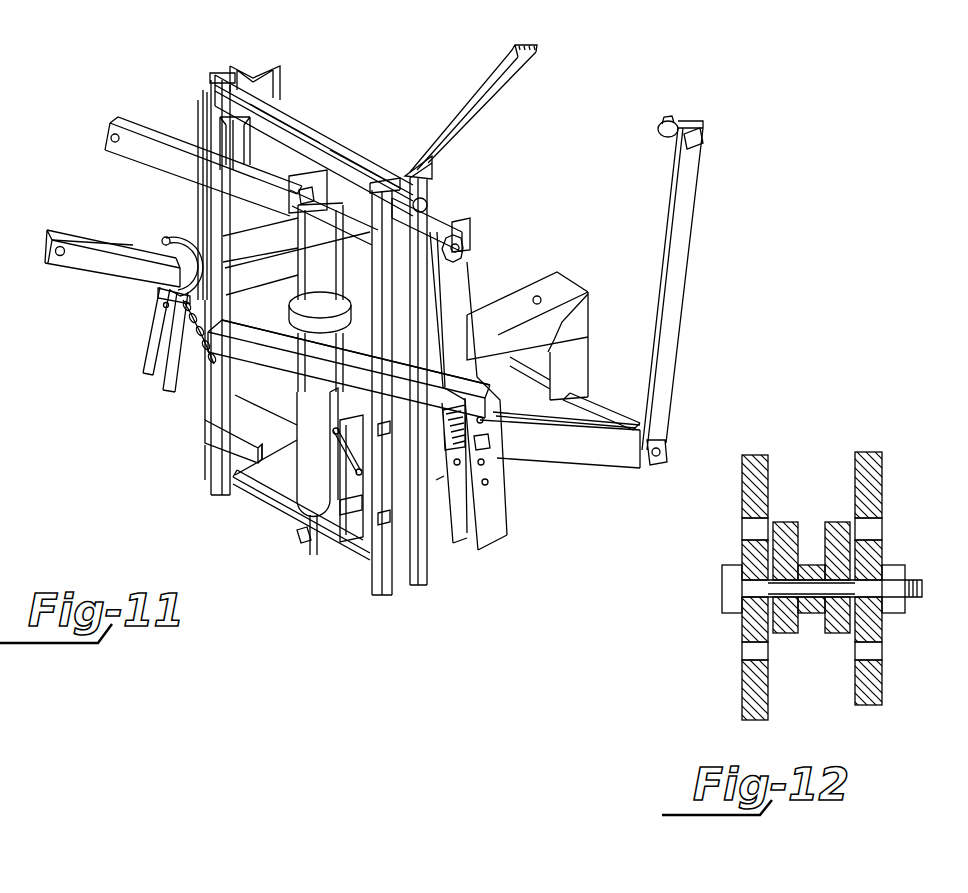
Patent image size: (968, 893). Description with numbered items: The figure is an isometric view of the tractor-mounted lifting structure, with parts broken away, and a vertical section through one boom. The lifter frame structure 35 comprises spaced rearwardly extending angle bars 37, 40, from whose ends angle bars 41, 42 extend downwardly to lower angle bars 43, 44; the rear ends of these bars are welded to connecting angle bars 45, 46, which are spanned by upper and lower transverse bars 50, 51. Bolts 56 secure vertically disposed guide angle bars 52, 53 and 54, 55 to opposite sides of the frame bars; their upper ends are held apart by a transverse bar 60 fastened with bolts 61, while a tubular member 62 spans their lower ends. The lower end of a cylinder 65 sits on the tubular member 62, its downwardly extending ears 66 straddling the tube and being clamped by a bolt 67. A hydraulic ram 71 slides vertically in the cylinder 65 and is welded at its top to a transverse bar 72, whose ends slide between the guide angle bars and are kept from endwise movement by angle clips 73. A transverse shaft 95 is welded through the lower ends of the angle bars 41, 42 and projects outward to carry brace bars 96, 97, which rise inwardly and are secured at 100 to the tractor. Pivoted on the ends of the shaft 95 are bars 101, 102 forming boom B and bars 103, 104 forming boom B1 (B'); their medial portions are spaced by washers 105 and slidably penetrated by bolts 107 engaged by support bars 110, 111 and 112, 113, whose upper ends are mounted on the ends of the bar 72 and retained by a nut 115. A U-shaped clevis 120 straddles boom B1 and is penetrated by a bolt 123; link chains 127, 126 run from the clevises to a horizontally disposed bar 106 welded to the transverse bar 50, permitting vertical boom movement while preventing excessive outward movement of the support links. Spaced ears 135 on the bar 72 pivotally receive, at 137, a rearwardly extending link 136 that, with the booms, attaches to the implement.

In FIG. 11, the lifter frame structure 35 is at (534, 282).
In FIG. 11, the angle bar 37 is at (252, 338).
In FIG. 11, the angle bar 40 is at (566, 293).
In FIG. 11, the angle bar 41 is at (470, 228).
In FIG. 11, the angle bar 42 is at (586, 360).
In FIG. 11, the angle bar 43 is at (245, 458).
In FIG. 11, the angle bar 44 is at (445, 478).
In FIG. 11, the connecting angle bar 45 is at (214, 413).
In FIG. 11, the connecting angle bar 46 is at (355, 488).
In FIG. 11, the transverse bar 50 is at (303, 425).
In FIG. 11, the transverse bar 51 is at (262, 462).
In FIG. 11, the angle bar 52 is at (213, 74).
In FIG. 11, the angle bar 53 is at (279, 68).
In FIG. 11, the angle bar 54 is at (377, 182).
In FIG. 11, the angle bar 55 is at (434, 165).
In FIG. 11, the bolt 56 is at (378, 422).
In FIG. 11, the transverse bar 60 is at (278, 115).
In FIG. 11, the bolt 61 is at (205, 92).
In FIG. 11, the tubular member 62 is at (265, 497).
In FIG. 11, the cylinder 65 is at (316, 330).
In FIG. 11, the ear 66 is at (315, 554).
In FIG. 11, the bolt 67 is at (297, 538).
In FIG. 11, the hydraulic ram 71 is at (338, 270).
In FIG. 11, the transverse bar 72 is at (333, 167).
In FIG. 11, the angle clip 73 is at (222, 135).
In FIG. 11, the transverse shaft 95 is at (527, 370).
In FIG. 11, the brace bar 96 is at (497, 95).
In FIG. 11, the brace bar 97 is at (680, 254).
In FIG. 11, the securing point 100 is at (704, 140).
In FIG. 12, the bar 101 is at (785, 634).
In FIG. 11, the bar 102 is at (521, 458).
In FIG. 12, the bar 102 is at (845, 634).
In FIG. 11, the bar 103 is at (125, 274).
In FIG. 11, the bar 104 is at (106, 234).
In FIG. 12, the washer 105 is at (810, 565).
In FIG. 11, the horizontally disposed bar 106 is at (324, 392).
In FIG. 11, the bolt 107 is at (192, 262).
In FIG. 12, the bolt 107 is at (722, 586).
In FIG. 11, the support bar 110 is at (490, 540).
In FIG. 12, the support bar 110 is at (768, 691).
In FIG. 11, the support bar 111 is at (458, 540).
In FIG. 12, the support bar 111 is at (880, 681).
In FIG. 11, the support bar 112 is at (170, 385).
In FIG. 11, the support bar 113 is at (150, 352).
In FIG. 11, the nut 115 is at (467, 246).
In FIG. 11, the U-shaped clevis 120 is at (160, 308).
In FIG. 11, the bolt 123 is at (170, 236).
In FIG. 11, the link chain 126 is at (262, 345).
In FIG. 11, the link chain 127 is at (338, 462).
In FIG. 11, the ear 135 is at (312, 138).
In FIG. 11, the link 136 is at (122, 124).
In FIG. 11, the pivot 137 is at (288, 185).
In FIG. 11, the boom B is at (577, 470).
In FIG. 11, the boom B1 is at (60, 268).